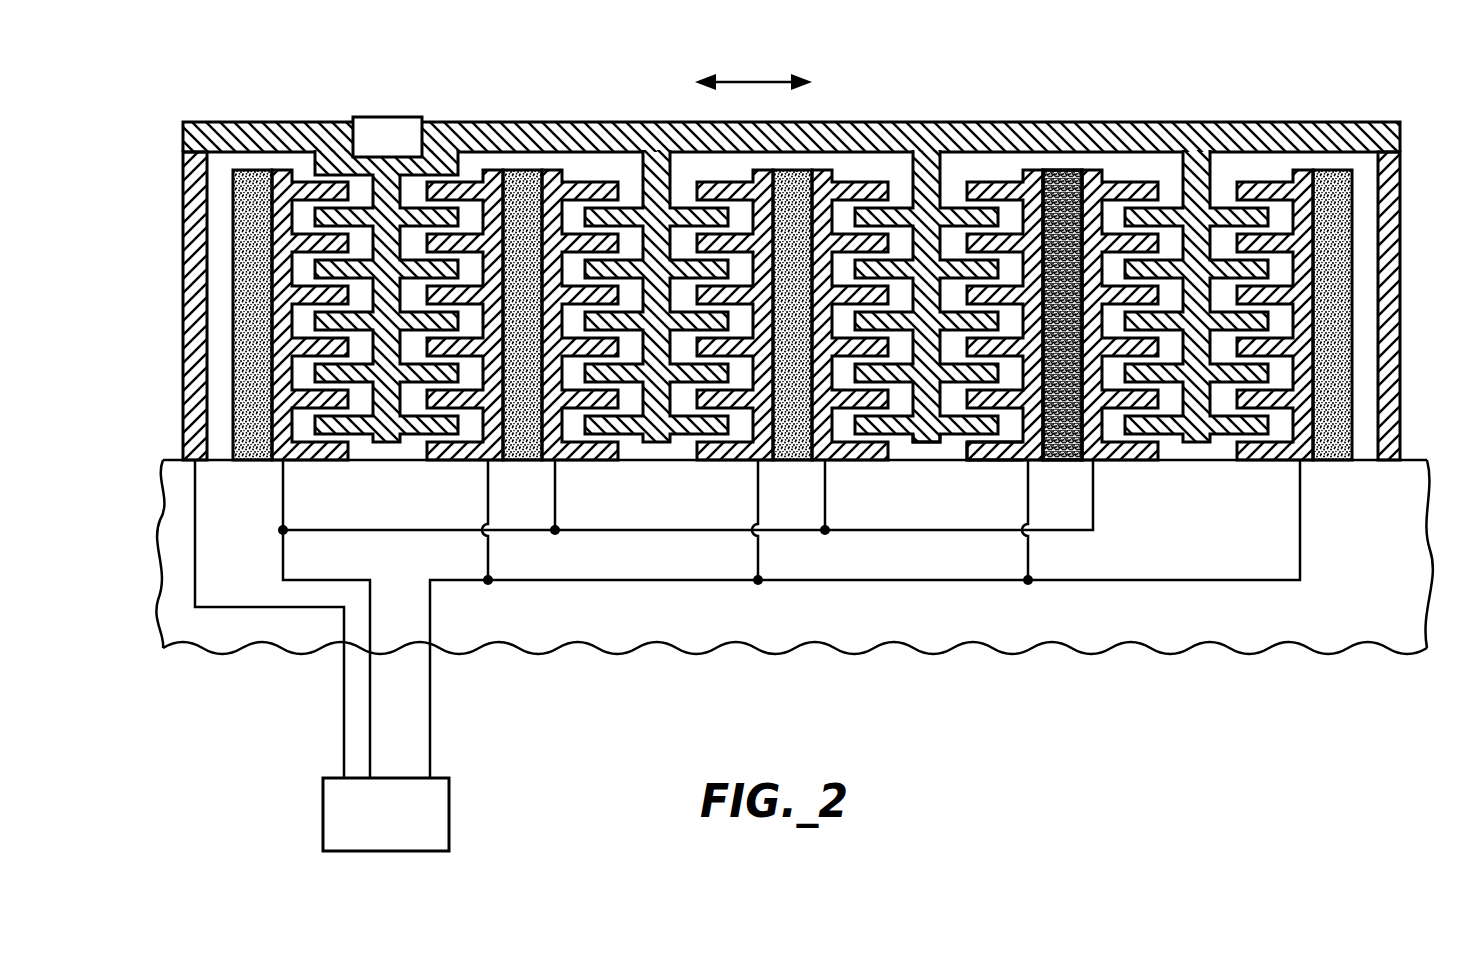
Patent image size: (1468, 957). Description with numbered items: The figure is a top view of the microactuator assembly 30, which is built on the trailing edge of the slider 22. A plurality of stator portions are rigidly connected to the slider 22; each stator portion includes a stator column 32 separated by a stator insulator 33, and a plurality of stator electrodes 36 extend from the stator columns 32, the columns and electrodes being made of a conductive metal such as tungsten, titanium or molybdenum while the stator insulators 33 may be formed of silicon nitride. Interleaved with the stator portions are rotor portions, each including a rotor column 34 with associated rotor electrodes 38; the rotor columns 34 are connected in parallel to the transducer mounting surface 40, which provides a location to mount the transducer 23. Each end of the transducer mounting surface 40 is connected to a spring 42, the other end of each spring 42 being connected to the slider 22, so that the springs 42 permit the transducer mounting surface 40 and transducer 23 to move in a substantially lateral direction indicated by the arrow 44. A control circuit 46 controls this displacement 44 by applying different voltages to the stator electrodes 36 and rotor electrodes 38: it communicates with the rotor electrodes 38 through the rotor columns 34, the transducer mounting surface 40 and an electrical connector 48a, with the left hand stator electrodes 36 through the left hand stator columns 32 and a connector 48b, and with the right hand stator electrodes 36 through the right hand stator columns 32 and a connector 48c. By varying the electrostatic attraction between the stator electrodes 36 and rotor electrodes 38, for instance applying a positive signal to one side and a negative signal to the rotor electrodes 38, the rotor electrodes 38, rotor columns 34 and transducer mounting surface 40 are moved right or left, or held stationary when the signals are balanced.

The slider 22 is at (1410, 480).
The transducer 23 is at (395, 125).
The microactuator assembly 30 is at (791, 86).
The stator column 32 is at (1030, 177).
The stator insulator 33 is at (1073, 178).
The rotor column 34 is at (930, 175).
The stator electrodes 36 is at (1000, 452).
The rotor electrodes 38 is at (948, 433).
The transducer mounting surface 40 is at (481, 130).
The spring 42 is at (195, 257).
The arrow indicating lateral displacement 44 is at (735, 80).
The control circuit 46 is at (400, 827).
The electrical connector 48a is at (343, 720).
The connector 48b is at (370, 673).
The connector 48c is at (430, 738).